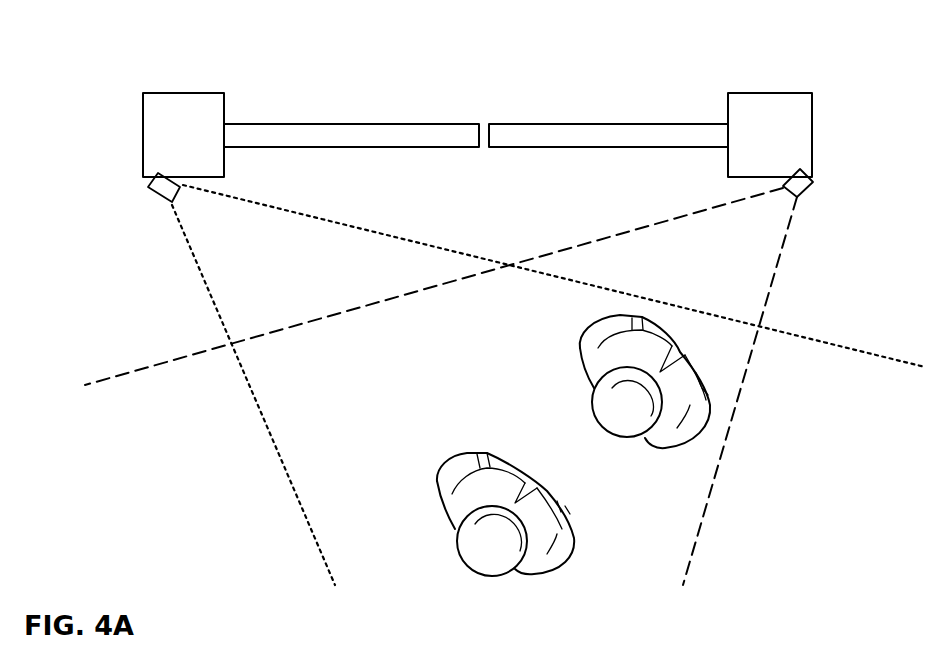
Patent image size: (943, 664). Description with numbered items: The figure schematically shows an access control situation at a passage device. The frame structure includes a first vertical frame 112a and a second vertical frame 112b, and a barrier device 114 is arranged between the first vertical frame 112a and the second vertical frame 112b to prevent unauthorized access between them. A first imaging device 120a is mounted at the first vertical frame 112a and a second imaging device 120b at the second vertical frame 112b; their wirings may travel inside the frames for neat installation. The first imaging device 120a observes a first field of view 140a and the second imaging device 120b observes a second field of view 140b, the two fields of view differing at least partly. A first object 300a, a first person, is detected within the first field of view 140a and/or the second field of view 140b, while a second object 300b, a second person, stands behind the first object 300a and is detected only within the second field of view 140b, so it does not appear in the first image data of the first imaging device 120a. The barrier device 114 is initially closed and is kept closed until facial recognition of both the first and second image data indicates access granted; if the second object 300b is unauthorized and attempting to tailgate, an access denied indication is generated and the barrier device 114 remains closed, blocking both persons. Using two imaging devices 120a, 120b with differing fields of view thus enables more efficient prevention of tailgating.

The first vertical frame 112a is at (783, 92).
The second vertical frame 112b is at (177, 92).
The barrier device 114 is at (565, 123).
The first imaging device 120a is at (803, 192).
The second imaging device 120b is at (160, 200).
The first field of view 140a is at (748, 358).
The second field of view 140b is at (243, 375).
The first object 300a is at (680, 448).
The second object 300b is at (547, 572).